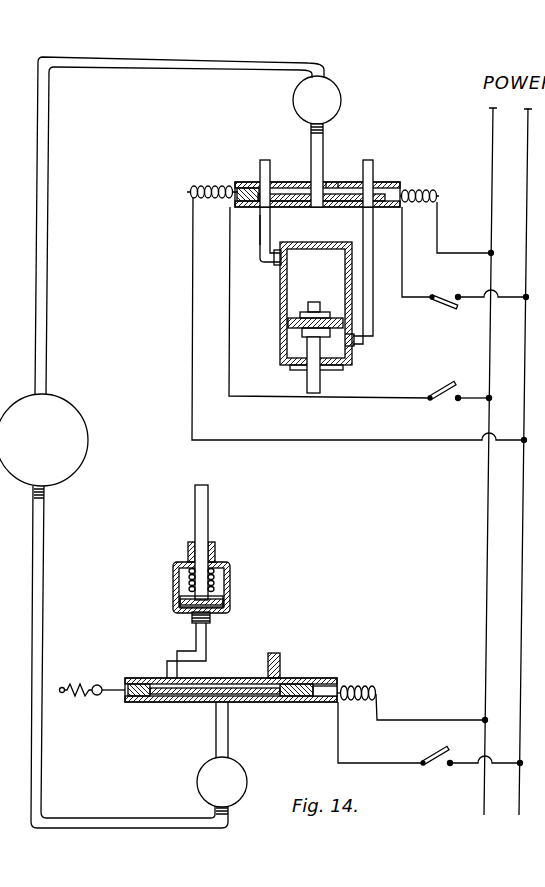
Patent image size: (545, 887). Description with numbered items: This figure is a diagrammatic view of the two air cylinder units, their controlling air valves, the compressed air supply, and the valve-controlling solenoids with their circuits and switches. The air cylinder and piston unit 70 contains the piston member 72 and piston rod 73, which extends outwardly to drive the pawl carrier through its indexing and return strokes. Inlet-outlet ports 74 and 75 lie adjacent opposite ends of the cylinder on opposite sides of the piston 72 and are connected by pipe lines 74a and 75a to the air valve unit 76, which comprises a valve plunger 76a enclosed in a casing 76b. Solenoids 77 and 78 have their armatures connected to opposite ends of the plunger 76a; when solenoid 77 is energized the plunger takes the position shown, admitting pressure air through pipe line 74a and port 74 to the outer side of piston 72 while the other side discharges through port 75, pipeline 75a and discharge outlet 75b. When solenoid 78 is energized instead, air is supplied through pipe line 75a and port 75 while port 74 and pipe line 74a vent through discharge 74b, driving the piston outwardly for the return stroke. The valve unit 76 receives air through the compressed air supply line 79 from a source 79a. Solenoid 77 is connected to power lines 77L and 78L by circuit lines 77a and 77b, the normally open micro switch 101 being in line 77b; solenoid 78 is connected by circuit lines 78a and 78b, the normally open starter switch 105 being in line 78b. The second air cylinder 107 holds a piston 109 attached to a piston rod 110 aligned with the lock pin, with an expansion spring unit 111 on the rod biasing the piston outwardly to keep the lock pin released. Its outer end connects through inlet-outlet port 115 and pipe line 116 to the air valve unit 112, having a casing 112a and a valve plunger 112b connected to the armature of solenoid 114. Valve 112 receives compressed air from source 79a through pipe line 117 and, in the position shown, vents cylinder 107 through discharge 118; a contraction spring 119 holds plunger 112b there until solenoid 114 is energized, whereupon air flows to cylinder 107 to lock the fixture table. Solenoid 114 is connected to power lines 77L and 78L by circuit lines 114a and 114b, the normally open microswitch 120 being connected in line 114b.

The air cylinder and piston unit 70 is at (281, 290).
The piston member 72 is at (296, 317).
The piston rod 73 is at (321, 381).
The inlet-outlet port 74 is at (276, 262).
The pipe line 74a is at (303, 236).
The discharge 74b is at (264, 160).
The inlet-outlet port 75 is at (353, 354).
The pipeline 75a is at (406, 329).
The discharge outlet 75b is at (403, 172).
The air valve unit 76 is at (241, 182).
The valve plunger 76a is at (331, 182).
The casing 76b is at (287, 182).
The solenoid 77 is at (218, 186).
The circuit line 77a is at (266, 465).
The circuit line 77b is at (266, 420).
The power line 77L is at (492, 121).
The solenoid 78 is at (437, 190).
The circuit line 78a is at (468, 244).
The circuit line 78b is at (435, 285).
The power line 78L is at (527, 157).
The compressed air supply line 79 is at (325, 146).
The source of air under pressure 79a is at (120, 412).
The micro switch 101 is at (442, 389).
The starter switch 105 is at (479, 310).
The air cylinder 107 is at (230, 588).
The piston 109 is at (231, 604).
The piston rod 110 is at (204, 524).
The expansion spring unit 111 is at (192, 579).
The air valve unit 112 is at (286, 683).
The casing 112a is at (300, 729).
The valve plunger 112b is at (168, 729).
The solenoid 114 is at (375, 693).
The circuit line 114a is at (435, 715).
The circuit line 114b is at (405, 759).
The inlet-outlet port 115 is at (193, 619).
The pipe line 116 is at (168, 665).
The pipe line 117 is at (44, 656).
The discharge 118 is at (275, 664).
The contraction spring 119 is at (93, 703).
The microswitch 120 is at (439, 752).